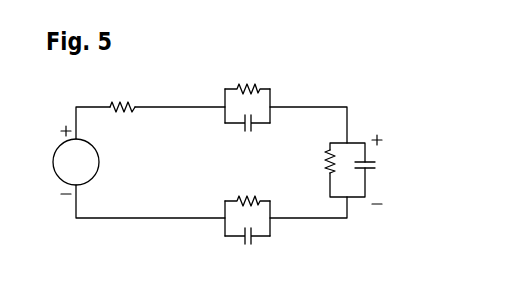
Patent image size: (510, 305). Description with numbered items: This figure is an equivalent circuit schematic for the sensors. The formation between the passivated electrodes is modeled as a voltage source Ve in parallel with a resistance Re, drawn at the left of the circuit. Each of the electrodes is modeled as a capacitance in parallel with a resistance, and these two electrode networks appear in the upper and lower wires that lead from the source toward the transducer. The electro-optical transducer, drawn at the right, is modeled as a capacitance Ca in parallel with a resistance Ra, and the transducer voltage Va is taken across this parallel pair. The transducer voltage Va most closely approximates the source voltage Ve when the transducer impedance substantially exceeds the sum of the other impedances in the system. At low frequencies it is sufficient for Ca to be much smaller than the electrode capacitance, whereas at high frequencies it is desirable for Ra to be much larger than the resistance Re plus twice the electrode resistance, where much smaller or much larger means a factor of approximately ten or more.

The voltage source Ve is at (76, 160).
The resistance Re is at (122, 91).
The resistance Ra is at (318, 170).
The capacitance Ca is at (357, 176).
The transducer voltage Va is at (388, 169).